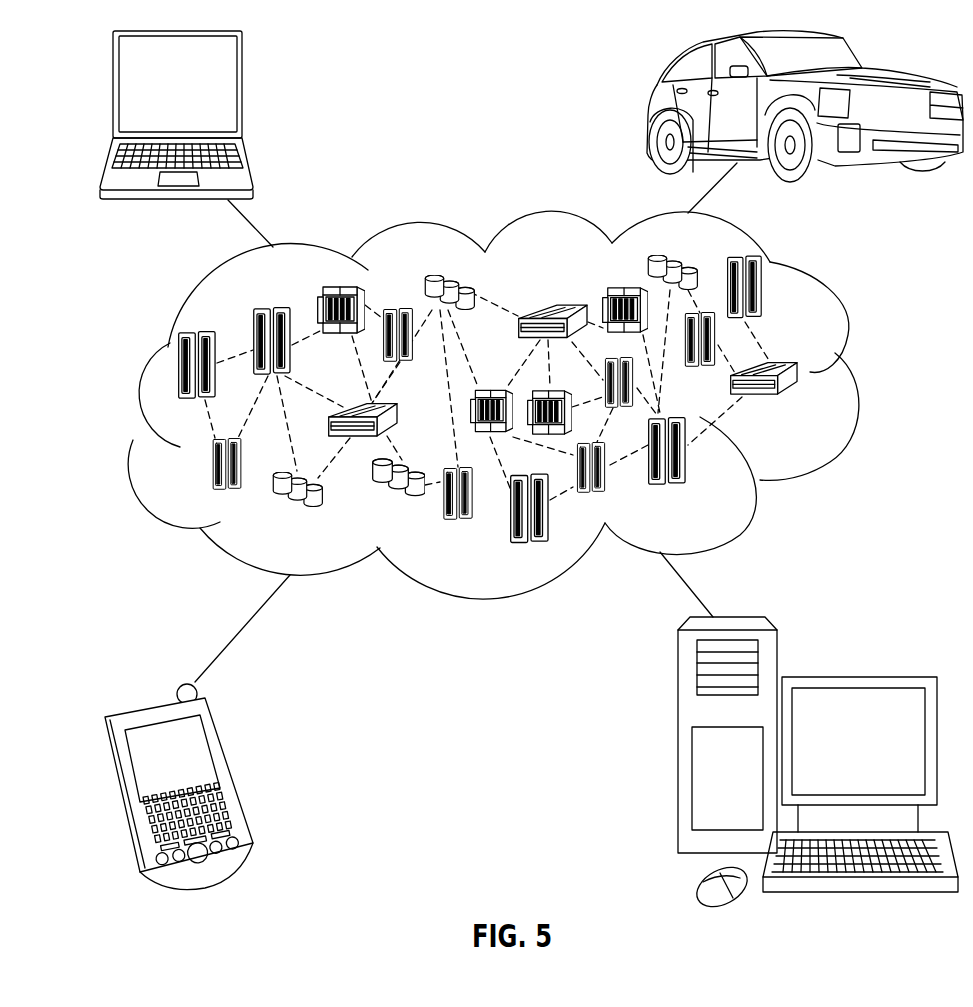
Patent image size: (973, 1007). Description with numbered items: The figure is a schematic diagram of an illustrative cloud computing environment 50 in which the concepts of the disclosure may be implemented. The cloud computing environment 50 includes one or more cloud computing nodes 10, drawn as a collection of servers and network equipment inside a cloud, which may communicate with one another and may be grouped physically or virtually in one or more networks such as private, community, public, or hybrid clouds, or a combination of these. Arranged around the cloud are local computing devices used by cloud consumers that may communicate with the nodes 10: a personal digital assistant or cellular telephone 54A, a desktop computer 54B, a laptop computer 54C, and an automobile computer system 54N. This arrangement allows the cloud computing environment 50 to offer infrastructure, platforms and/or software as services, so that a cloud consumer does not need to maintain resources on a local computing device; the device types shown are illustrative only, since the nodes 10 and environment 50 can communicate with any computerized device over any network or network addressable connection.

The cloud computing nodes 10 is at (532, 399).
The cloud computing environment 50 is at (858, 375).
The personal digital assistant (PDA) or cellular telephone 54A is at (232, 772).
The desktop computer 54B is at (853, 675).
The laptop computer 54C is at (242, 92).
The automobile computer system 54N is at (650, 108).